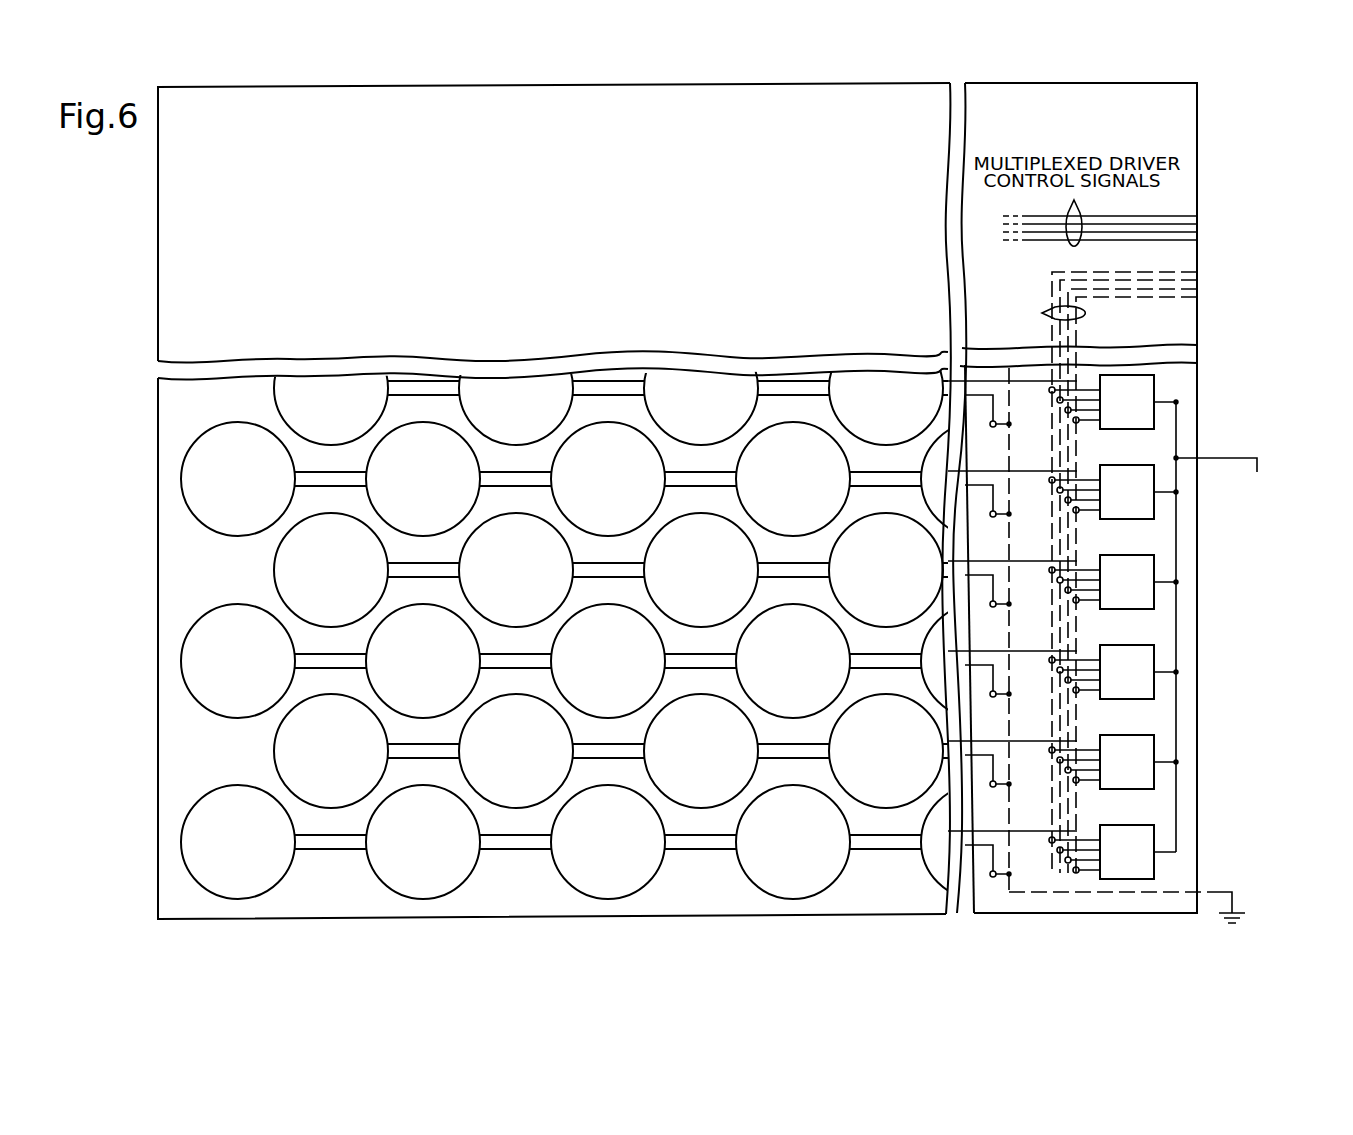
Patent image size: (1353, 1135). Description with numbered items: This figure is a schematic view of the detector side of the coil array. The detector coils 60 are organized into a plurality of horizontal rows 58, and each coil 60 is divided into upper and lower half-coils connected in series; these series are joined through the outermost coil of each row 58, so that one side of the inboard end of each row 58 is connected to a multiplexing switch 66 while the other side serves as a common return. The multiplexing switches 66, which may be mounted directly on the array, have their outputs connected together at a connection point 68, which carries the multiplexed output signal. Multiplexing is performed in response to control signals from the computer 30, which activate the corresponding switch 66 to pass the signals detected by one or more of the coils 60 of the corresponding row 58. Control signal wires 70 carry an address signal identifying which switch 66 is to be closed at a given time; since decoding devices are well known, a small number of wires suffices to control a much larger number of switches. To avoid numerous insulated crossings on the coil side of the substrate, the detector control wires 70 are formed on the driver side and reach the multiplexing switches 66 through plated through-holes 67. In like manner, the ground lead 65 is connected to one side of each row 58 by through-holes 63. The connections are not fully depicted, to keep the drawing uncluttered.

The horizontal row 58 is at (170, 647).
The coil 60 is at (204, 706).
The through-hole 63 is at (992, 700).
The ground lead 65 is at (1213, 889).
The multiplexing switch 66 is at (1156, 658).
The plated through-hole 67 is at (1074, 602).
The connection point 68 is at (1176, 458).
The control signal wire 70 is at (1043, 313).
The computer 30 is at (1253, 318).